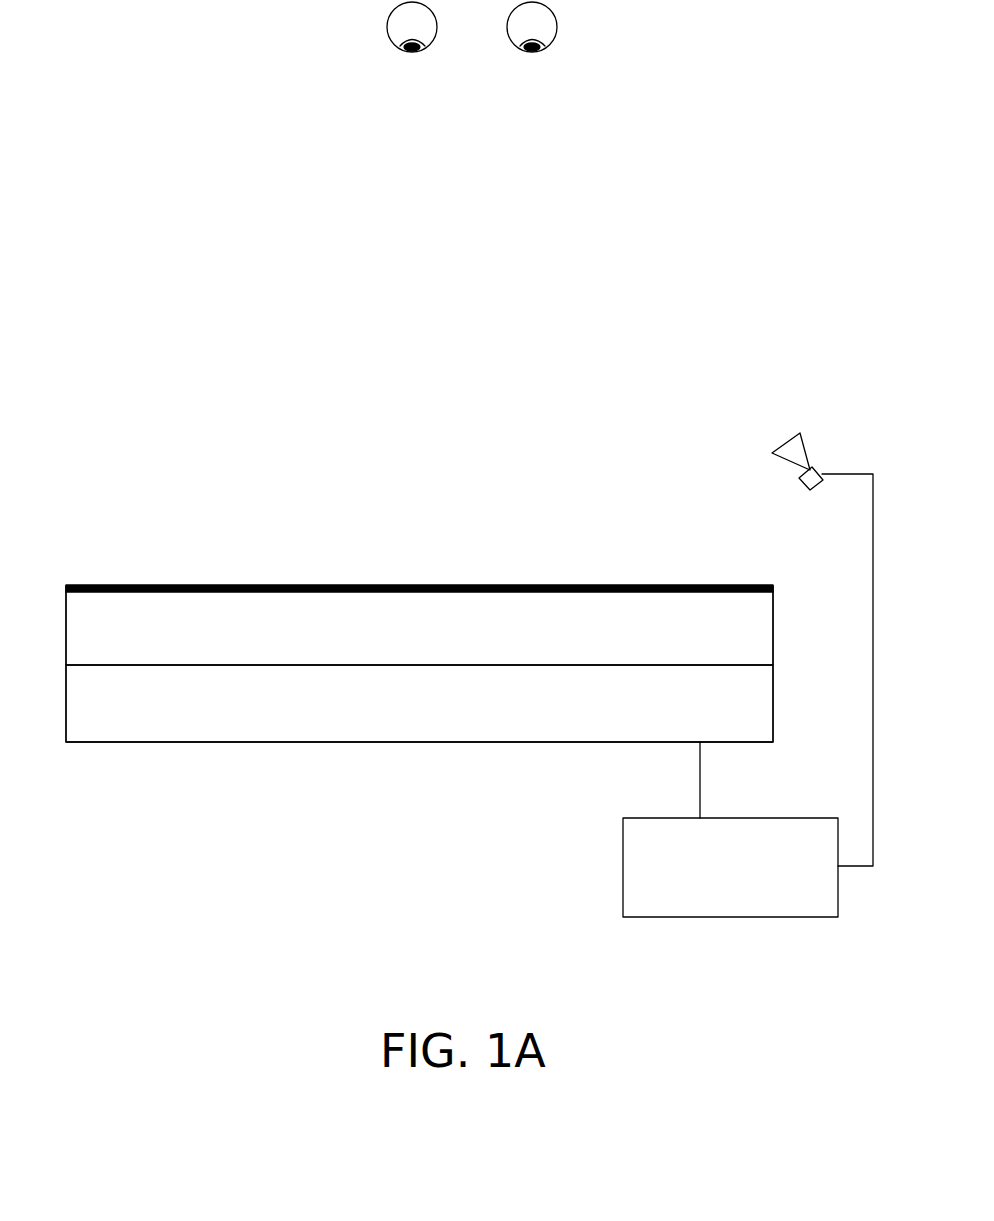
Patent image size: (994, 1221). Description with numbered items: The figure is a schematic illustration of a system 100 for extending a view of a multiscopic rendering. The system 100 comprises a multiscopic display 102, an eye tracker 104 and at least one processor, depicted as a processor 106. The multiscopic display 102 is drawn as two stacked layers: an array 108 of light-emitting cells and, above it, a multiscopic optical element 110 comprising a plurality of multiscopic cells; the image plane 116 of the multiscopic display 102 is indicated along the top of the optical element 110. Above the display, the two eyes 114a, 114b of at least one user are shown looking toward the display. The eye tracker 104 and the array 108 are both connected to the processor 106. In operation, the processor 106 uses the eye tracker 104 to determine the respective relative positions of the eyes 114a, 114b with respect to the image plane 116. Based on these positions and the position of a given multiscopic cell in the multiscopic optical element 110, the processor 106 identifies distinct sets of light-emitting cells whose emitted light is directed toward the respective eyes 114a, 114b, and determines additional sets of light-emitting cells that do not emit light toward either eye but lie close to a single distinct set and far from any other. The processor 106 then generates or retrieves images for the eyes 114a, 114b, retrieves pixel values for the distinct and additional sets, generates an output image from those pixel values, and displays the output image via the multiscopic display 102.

The system 100 is at (748, 98).
The multiscopic display 102 is at (415, 665).
The eye tracker 104 is at (818, 466).
The processor 106 is at (752, 877).
The array of light-emitting cells 108 is at (755, 716).
The multiscopic optical element 110 is at (755, 639).
The eye 114a is at (397, 32).
The eye 114b is at (547, 32).
The image plane 116 is at (133, 585).